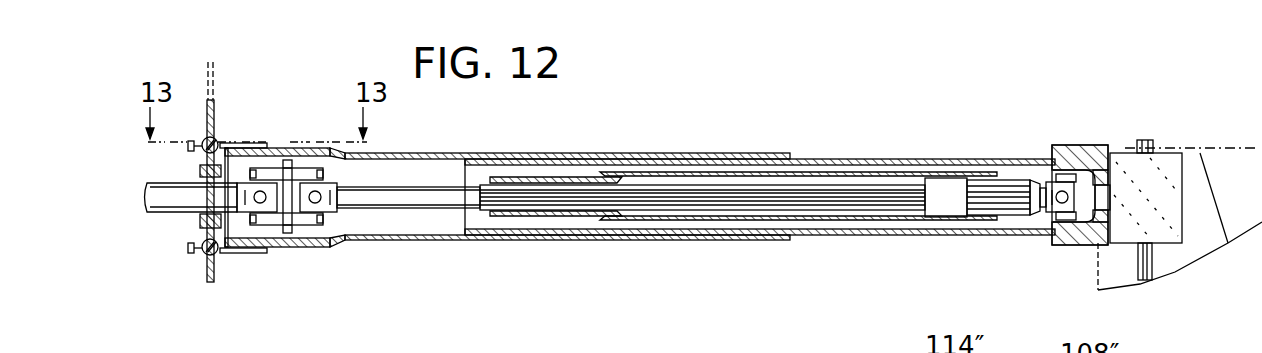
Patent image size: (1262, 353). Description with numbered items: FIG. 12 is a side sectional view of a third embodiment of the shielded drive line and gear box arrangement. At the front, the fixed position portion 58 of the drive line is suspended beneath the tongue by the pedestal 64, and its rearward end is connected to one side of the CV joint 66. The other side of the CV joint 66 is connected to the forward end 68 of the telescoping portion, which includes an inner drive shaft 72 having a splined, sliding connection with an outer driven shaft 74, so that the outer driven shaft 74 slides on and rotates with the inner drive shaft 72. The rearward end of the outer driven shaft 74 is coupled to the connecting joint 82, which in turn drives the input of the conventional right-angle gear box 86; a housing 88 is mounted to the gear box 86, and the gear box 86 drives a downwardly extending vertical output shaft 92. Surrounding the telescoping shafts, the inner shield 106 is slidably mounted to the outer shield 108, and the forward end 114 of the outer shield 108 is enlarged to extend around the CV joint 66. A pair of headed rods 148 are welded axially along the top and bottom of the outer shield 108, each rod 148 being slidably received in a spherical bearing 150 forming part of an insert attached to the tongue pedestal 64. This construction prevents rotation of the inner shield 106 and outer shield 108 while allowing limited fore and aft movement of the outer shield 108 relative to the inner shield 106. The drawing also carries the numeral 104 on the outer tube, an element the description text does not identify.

The fixed position portion 58 is at (168, 200).
The pedestal 64 is at (208, 141).
The CV joint 66 is at (287, 238).
The forward end of telescoping portion 68 is at (200, 180).
The inner drive shaft 72 is at (421, 197).
The outer driven shaft 74 is at (976, 175).
The connecting joint 82 is at (1070, 223).
The gear box 86 is at (1165, 170).
The housing 88 is at (1088, 157).
The output shaft 92 is at (1145, 140).
The outer tube 104 is at (703, 145).
The inner shield 106 is at (890, 160).
The outer shield 108 is at (505, 153).
The forward end of outer shield 114 is at (285, 158).
The headed rods 148 is at (237, 146).
The spherical bearing 150 is at (214, 138).